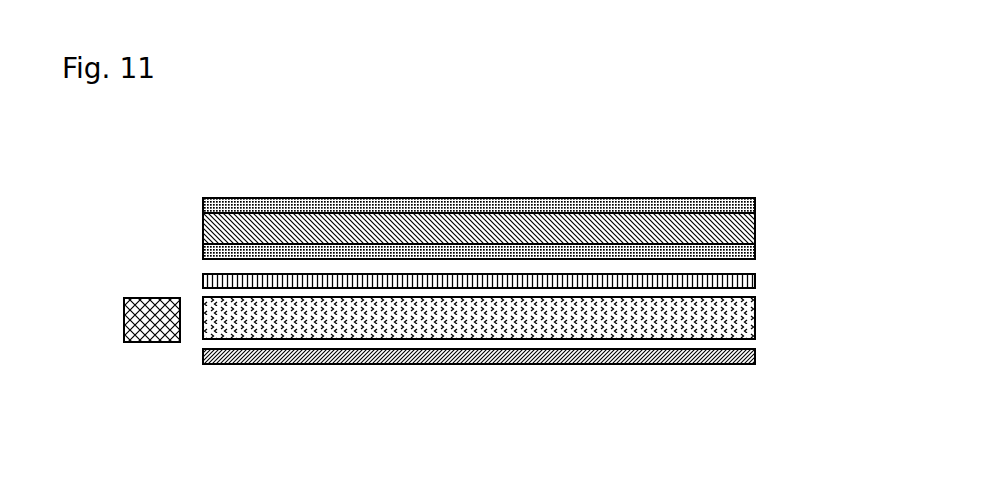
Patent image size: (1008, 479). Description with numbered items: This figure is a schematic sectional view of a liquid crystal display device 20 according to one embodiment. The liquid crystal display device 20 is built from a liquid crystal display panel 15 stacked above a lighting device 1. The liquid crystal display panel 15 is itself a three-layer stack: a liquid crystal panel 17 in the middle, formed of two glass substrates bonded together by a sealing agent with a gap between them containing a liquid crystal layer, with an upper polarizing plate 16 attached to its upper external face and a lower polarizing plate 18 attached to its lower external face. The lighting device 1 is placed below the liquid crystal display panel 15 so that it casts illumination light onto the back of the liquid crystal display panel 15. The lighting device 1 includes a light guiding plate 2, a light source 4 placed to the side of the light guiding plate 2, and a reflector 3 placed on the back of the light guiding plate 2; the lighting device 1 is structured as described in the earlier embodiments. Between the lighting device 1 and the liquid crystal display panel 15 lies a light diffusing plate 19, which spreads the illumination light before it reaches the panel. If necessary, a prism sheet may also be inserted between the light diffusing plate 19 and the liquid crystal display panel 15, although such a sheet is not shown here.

The lighting device 1 is at (833, 305).
The light guiding plate 2 is at (756, 323).
The reflector 3 is at (756, 355).
The light source 4 is at (150, 343).
The liquid crystal display panel 15 is at (833, 188).
The upper polarizing plate 16 is at (756, 209).
The liquid crystal panel 17 is at (756, 229).
The lower polarizing plate 18 is at (756, 257).
The light diffusing plate 19 is at (756, 285).
The liquid crystal display device 20 is at (541, 160).